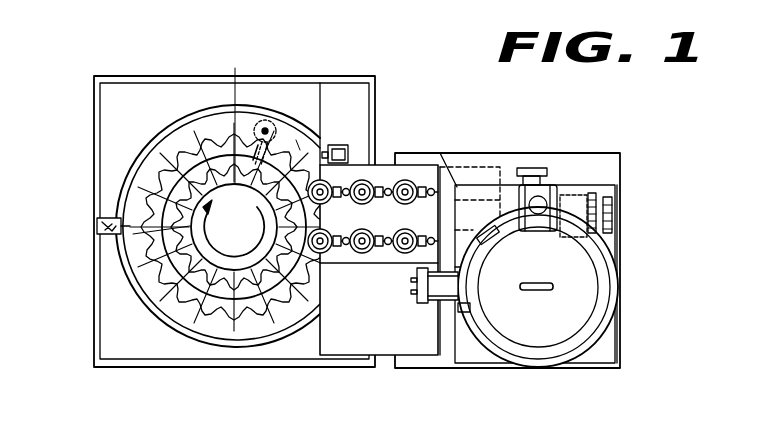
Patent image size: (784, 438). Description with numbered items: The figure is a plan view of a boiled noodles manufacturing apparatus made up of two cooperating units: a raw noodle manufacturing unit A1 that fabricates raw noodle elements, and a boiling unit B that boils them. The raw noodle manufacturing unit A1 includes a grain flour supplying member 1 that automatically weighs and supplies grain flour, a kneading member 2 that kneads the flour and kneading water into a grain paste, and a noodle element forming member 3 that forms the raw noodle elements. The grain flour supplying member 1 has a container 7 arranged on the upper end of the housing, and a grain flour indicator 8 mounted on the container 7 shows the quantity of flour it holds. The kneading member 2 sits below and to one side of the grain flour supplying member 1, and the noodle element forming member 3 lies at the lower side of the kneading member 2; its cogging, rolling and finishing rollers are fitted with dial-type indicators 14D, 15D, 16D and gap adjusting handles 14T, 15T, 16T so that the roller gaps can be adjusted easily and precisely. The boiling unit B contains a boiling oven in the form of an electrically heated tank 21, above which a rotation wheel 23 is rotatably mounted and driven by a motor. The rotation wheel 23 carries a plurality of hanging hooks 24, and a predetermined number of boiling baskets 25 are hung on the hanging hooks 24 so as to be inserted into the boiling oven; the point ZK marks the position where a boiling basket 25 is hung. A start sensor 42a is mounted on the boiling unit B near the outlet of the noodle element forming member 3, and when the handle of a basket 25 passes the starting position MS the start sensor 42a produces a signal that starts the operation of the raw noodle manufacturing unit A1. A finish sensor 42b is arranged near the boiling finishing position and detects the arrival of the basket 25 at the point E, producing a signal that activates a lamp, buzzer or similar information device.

The grain flour supplying member 1 is at (613, 282).
The kneading member 2 is at (478, 197).
The noodle element forming member 3 is at (371, 176).
The container 7 is at (587, 308).
The grain flour indicator 8 is at (423, 303).
The gap adjusting handle 14T is at (447, 187).
The gap adjusting handle 15T is at (390, 190).
The gap adjusting handle 16T is at (349, 190).
The dial-type indicator 14D is at (407, 252).
The dial-type indicator 15D is at (360, 252).
The dial-type indicator 16D is at (318, 252).
The electrically heated tank 21 is at (199, 327).
The rotation wheel 23 is at (212, 268).
The hanging hooks 24 is at (165, 242).
The boiling basket 25 is at (265, 120).
The start sensor 42a is at (338, 144).
The finish sensor 42b is at (110, 232).
The raw noodle manufacturing unit A1 is at (628, 232).
The boiling unit B is at (94, 368).
The point E is at (142, 220).
The starting position MS is at (296, 140).
The basket hanging position ZK is at (233, 92).